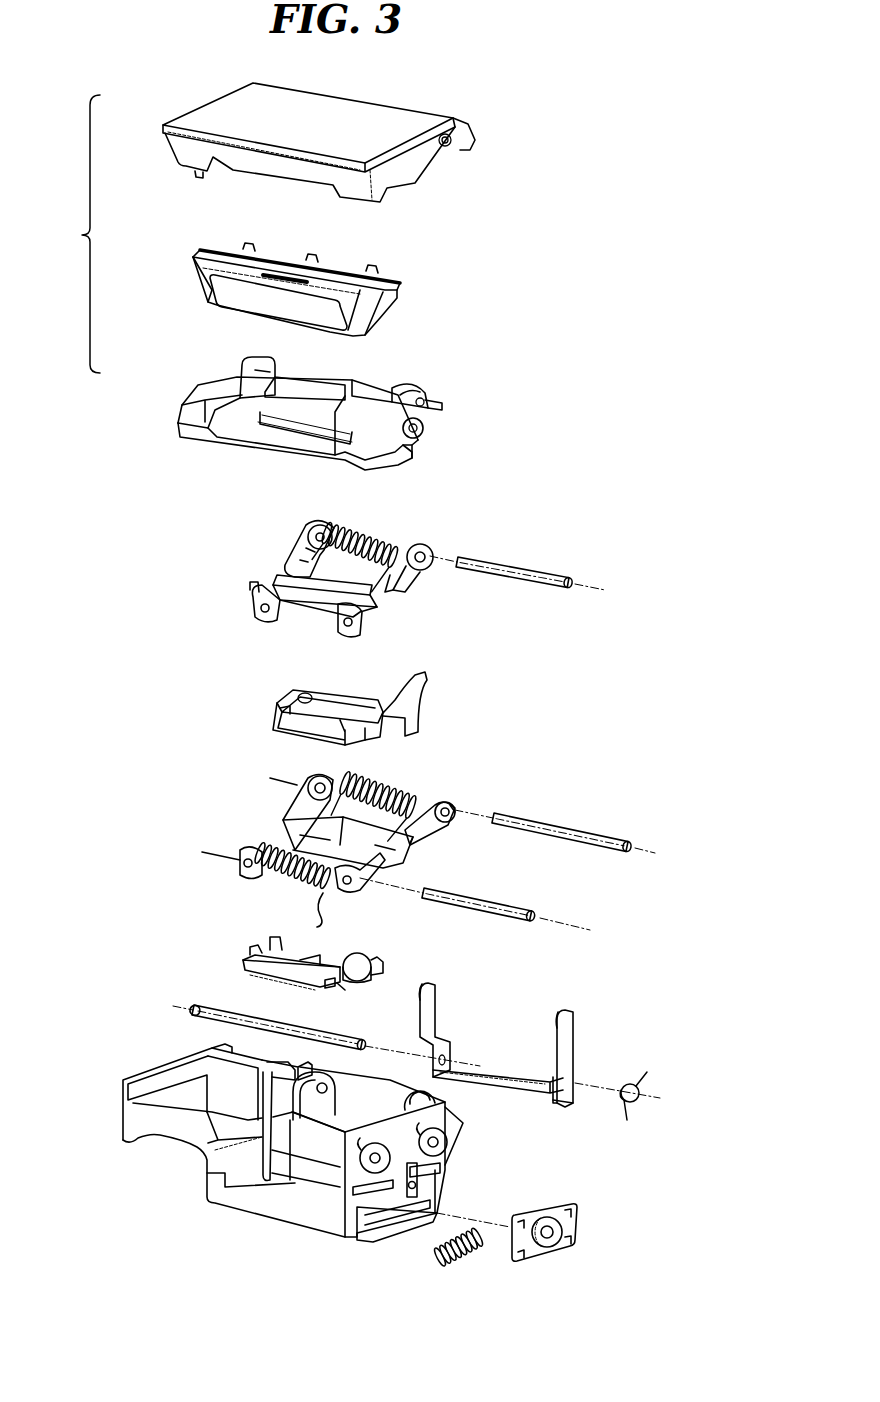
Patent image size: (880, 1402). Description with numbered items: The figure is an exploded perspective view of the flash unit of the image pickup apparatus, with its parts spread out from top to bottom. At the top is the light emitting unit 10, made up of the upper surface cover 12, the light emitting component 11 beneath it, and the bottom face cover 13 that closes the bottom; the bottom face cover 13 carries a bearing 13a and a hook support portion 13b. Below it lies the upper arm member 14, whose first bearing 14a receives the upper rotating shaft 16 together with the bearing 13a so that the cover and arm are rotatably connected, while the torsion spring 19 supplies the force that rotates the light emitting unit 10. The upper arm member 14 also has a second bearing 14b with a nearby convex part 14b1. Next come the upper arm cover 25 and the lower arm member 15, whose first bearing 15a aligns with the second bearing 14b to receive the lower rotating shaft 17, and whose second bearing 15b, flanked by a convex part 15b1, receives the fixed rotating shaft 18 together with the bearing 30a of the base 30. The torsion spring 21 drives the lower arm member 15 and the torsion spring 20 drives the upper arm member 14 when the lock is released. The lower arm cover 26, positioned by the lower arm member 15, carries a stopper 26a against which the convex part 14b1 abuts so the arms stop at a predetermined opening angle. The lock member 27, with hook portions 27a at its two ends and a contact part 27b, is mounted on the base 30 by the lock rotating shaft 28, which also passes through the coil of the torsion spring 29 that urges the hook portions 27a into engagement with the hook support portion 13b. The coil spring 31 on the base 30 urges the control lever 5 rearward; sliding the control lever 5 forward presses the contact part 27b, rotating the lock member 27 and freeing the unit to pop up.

The light emitting unit 10 is at (82, 235).
The upper surface cover 12 is at (215, 112).
The light emitting component 11 is at (367, 317).
The bottom face cover 13 is at (203, 388).
The bearing 13a is at (427, 433).
The hook support portion 13b is at (413, 452).
The upper arm member 14 is at (313, 562).
The first bearing 14a is at (323, 527).
The second bearing 14b is at (250, 615).
The convex part 14b1 is at (273, 590).
The torsion spring 19 is at (370, 537).
The upper rotating shaft 16 is at (540, 572).
The upper arm cover 25 is at (358, 712).
The lower arm member 15 is at (313, 843).
The first bearing 15a is at (250, 850).
The second bearing 15b is at (313, 777).
The convex part 15b1 is at (450, 802).
The torsion spring 21 is at (373, 783).
The torsion spring 20 is at (287, 883).
The fixed rotating shaft 18 is at (600, 827).
The lower rotating shaft 17 is at (513, 903).
The lower arm cover 26 is at (247, 970).
The stopper 26a is at (337, 983).
The lock rotating shaft 28 is at (213, 1008).
The lock member 27 is at (568, 1062).
The hook portions 27a is at (433, 1010).
The contact part 27b is at (557, 1103).
The torsion spring 29 is at (640, 1098).
The base 30 is at (187, 1127).
The bearing 30a is at (413, 1095).
The control lever 5 is at (573, 1233).
The coil spring 31 is at (440, 1260).